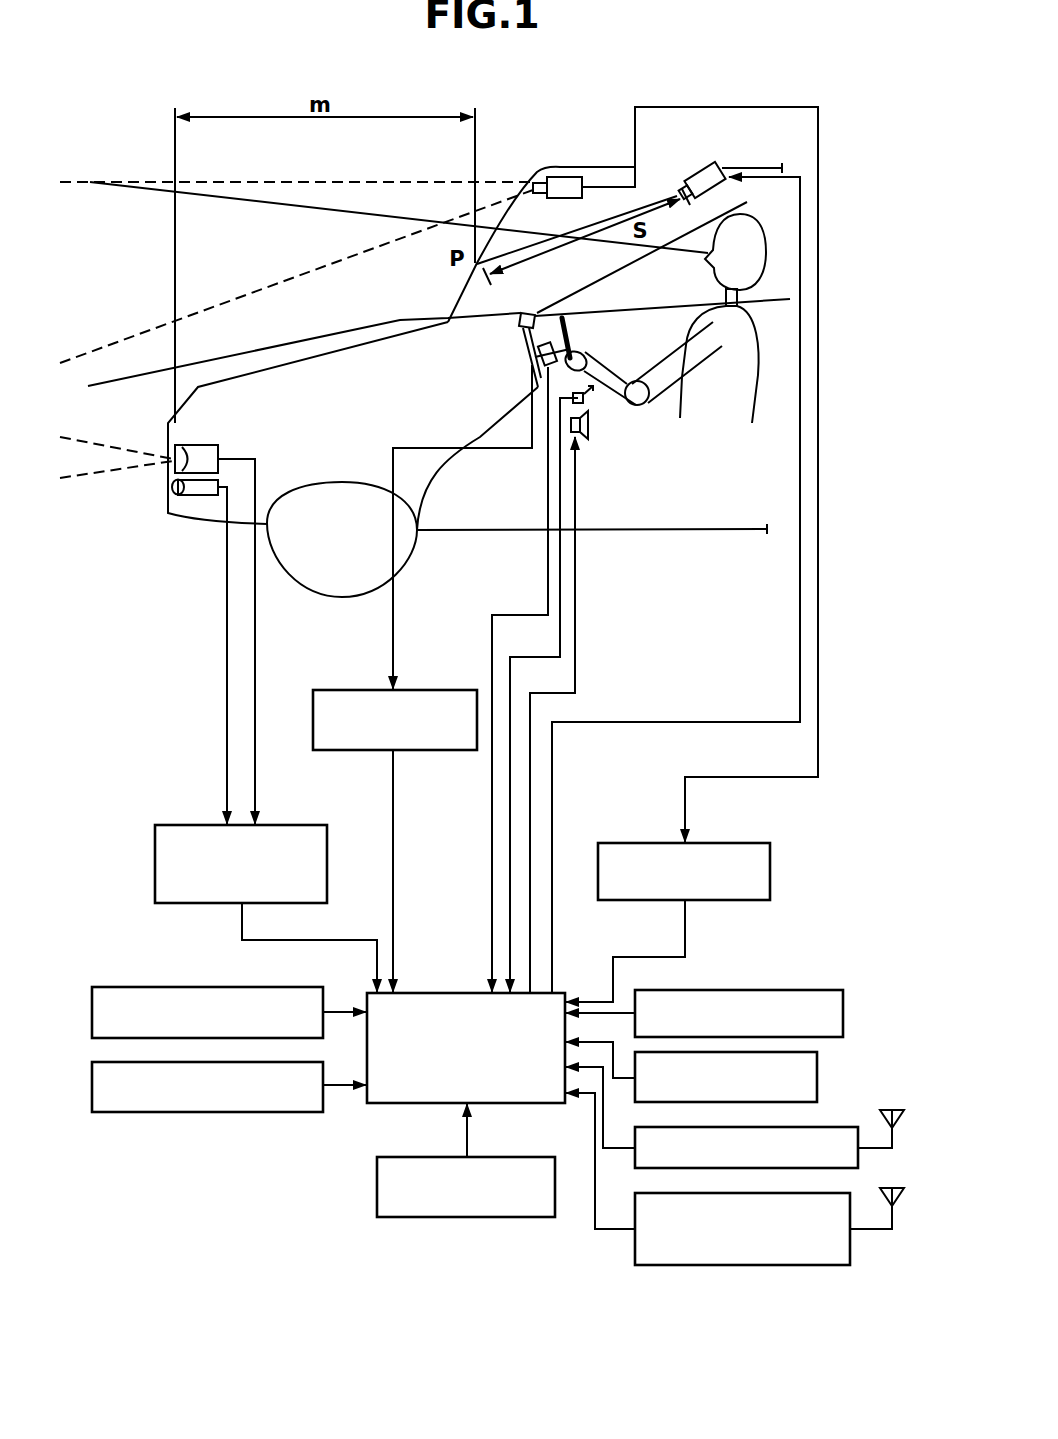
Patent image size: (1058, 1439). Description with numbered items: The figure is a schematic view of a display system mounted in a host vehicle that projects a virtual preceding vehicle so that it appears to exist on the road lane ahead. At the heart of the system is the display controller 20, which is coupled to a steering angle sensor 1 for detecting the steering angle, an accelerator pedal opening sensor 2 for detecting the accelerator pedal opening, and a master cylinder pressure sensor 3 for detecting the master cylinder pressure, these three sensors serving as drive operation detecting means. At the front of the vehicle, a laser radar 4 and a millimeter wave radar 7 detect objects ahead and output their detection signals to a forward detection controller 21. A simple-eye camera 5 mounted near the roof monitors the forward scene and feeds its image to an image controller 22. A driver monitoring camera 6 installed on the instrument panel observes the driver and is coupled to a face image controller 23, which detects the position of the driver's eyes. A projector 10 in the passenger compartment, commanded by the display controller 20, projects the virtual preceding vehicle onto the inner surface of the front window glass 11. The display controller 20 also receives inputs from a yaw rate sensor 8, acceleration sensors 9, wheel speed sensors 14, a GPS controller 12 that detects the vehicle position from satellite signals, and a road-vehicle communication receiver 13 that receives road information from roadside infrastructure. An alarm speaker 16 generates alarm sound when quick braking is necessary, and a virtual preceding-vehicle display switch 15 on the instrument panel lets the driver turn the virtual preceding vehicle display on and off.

The steering angle sensor 1 is at (558, 345).
The accelerator pedal opening sensor 2 is at (302, 987).
The master cylinder pressure sensor 3 is at (306, 1062).
The laser radar 4 is at (198, 446).
The simple-eye camera 5 is at (563, 177).
The driver monitoring camera 6 is at (533, 313).
The millimeter wave radar 7 is at (190, 497).
The yaw rate sensor 8 is at (816, 990).
The acceleration sensors 9 is at (820, 1063).
The projector 10 is at (706, 168).
The front window glass 11 is at (460, 300).
The GPS controller 12 is at (820, 1127).
The road-vehicle communication receiver 13 is at (817, 1265).
The wheel speed sensors 14 is at (525, 1157).
The virtual preceding-vehicle display switch 15 is at (586, 400).
The alarm speaker 16 is at (590, 430).
The display controller 20 is at (395, 1103).
The forward detection controller 21 is at (288, 825).
The image controller 22 is at (750, 843).
The face image controller 23 is at (430, 690).